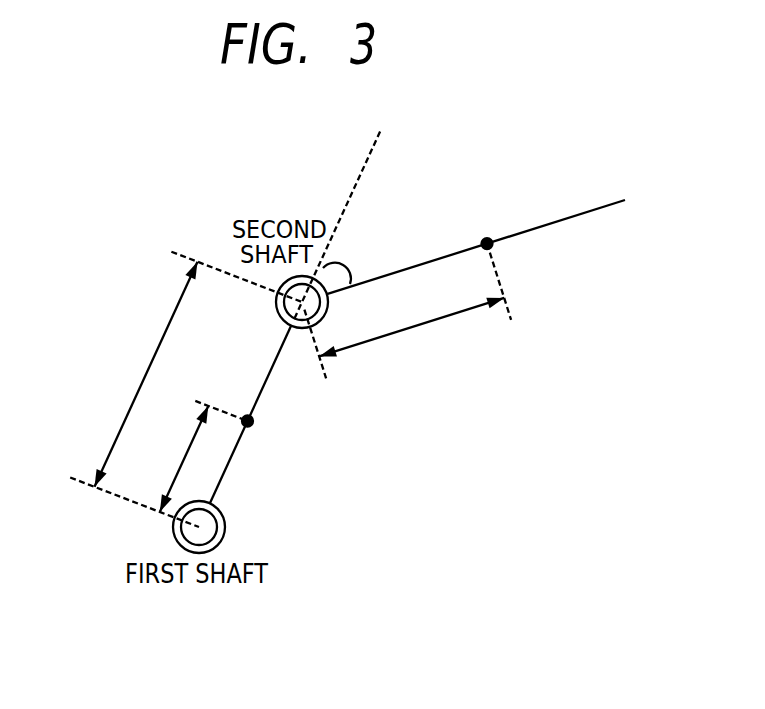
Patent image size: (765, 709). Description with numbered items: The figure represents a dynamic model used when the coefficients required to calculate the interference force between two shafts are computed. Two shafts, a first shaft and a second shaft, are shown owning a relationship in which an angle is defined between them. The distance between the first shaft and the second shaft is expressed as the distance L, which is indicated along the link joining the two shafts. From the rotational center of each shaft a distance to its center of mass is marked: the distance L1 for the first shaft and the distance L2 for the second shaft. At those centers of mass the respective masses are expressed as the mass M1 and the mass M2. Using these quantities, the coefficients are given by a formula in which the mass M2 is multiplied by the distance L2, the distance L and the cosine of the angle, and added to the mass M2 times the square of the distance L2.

The distance between the first shaft and the second shaft L is at (186, 389).
The distance from rotational center to center of mass of the first shaft L1 is at (200, 456).
The distance from rotational center to center of mass of the second shaft L2 is at (407, 311).
The mass of the first shaft M1 is at (267, 438).
The mass of the second shaft M2 is at (509, 257).